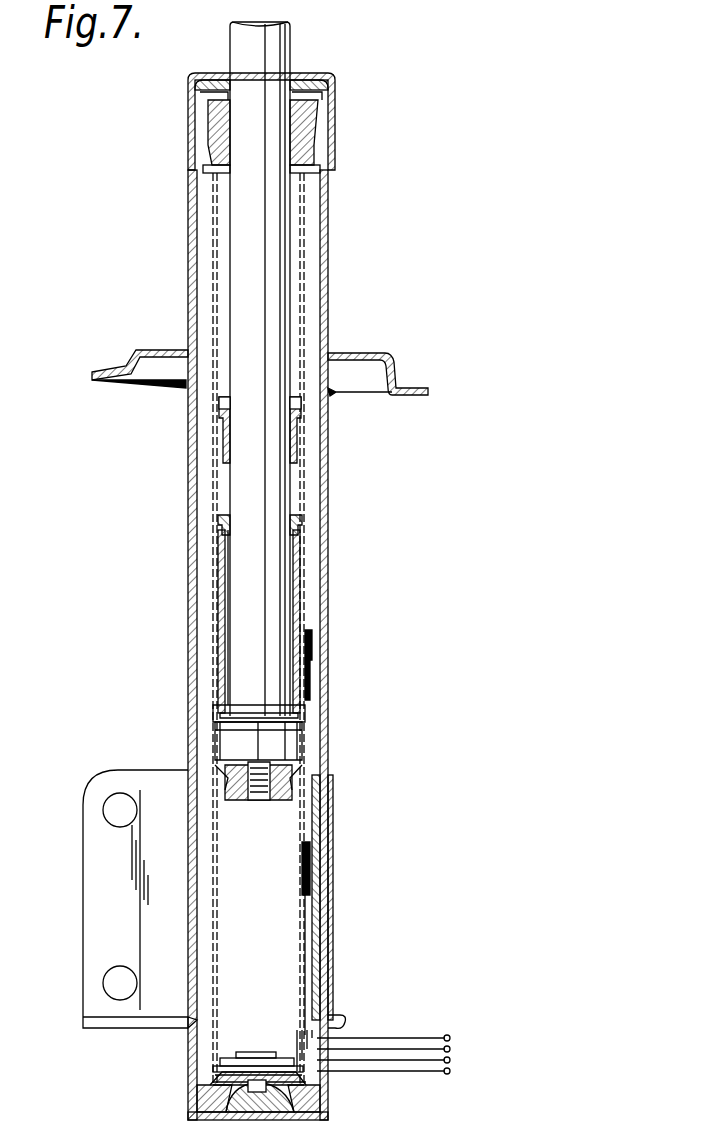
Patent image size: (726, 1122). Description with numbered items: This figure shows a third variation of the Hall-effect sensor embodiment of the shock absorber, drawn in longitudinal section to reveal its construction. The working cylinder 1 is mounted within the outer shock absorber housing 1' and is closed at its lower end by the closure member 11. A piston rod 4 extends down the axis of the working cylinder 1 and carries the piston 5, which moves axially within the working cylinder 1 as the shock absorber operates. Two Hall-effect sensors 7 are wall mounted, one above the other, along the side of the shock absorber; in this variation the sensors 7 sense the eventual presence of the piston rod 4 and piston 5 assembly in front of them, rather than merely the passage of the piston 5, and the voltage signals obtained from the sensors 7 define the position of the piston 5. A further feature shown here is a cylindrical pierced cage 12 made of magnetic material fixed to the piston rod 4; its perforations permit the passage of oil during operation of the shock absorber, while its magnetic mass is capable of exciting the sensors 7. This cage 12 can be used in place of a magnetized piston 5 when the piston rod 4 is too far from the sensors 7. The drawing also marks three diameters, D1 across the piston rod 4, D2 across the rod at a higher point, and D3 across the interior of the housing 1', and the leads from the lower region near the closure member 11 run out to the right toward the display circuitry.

The work cylinder 1 is at (298, 629).
The shock absorber housing 1' is at (291, 596).
The piston rod 4 is at (270, 130).
The piston 5 is at (288, 742).
The Hall-effect sensors 7 is at (308, 642).
The closure member 11 is at (315, 1083).
The cylindrical pierced cage 12 is at (300, 592).
The diameter D1 is at (232, 508).
The diameter D2 is at (288, 290).
The diameter D3 is at (320, 565).